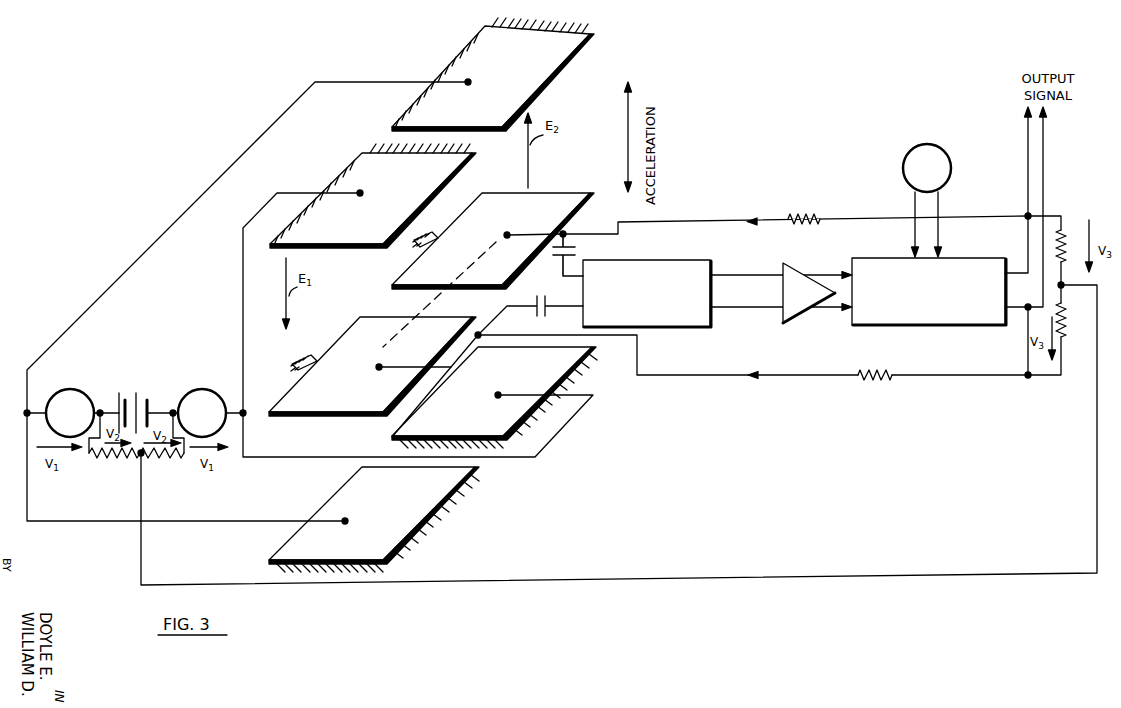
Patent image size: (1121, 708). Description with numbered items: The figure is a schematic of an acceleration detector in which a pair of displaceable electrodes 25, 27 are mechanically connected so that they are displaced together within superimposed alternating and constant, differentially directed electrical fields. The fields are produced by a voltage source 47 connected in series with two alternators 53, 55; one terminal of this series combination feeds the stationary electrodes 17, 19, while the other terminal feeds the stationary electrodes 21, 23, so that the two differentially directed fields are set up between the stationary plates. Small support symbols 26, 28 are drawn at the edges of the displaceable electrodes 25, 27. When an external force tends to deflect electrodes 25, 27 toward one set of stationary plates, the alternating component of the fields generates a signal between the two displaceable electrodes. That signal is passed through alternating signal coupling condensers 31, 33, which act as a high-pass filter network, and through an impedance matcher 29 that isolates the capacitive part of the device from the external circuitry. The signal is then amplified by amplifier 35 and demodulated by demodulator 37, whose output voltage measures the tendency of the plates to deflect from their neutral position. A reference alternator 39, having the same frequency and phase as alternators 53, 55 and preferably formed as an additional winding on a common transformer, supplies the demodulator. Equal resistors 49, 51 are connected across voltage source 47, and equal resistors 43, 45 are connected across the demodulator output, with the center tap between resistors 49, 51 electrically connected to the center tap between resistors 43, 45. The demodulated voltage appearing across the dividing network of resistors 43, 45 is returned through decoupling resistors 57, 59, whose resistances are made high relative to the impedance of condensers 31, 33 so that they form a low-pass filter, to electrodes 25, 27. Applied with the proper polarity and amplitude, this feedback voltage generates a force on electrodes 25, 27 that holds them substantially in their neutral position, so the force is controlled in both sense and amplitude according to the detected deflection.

The stationary electrode 17 is at (538, 74).
The stationary electrode 19 is at (413, 503).
The stationary electrode 21 is at (350, 178).
The stationary electrode 23 is at (548, 367).
The displaceable electrode 25 is at (340, 362).
The flexible support 26 is at (294, 358).
The displaceable electrode 27 is at (552, 207).
The flexible support 28 is at (438, 232).
The impedance matcher 29 is at (665, 312).
The alternating signal coupling condenser 31 is at (543, 301).
The alternating signal coupling condenser 33 is at (578, 256).
The amplifier 35 is at (800, 287).
The demodulator 37 is at (932, 307).
The alternator 39 is at (933, 148).
The resistor 43 is at (1070, 240).
The resistor 45 is at (1067, 320).
The voltage source 47 is at (143, 395).
The resistor 49 is at (110, 461).
The resistor 51 is at (148, 461).
The alternator 53 is at (68, 397).
The alternator 55 is at (205, 392).
The decoupling resistor 57 is at (810, 216).
The decoupling resistor 59 is at (870, 380).